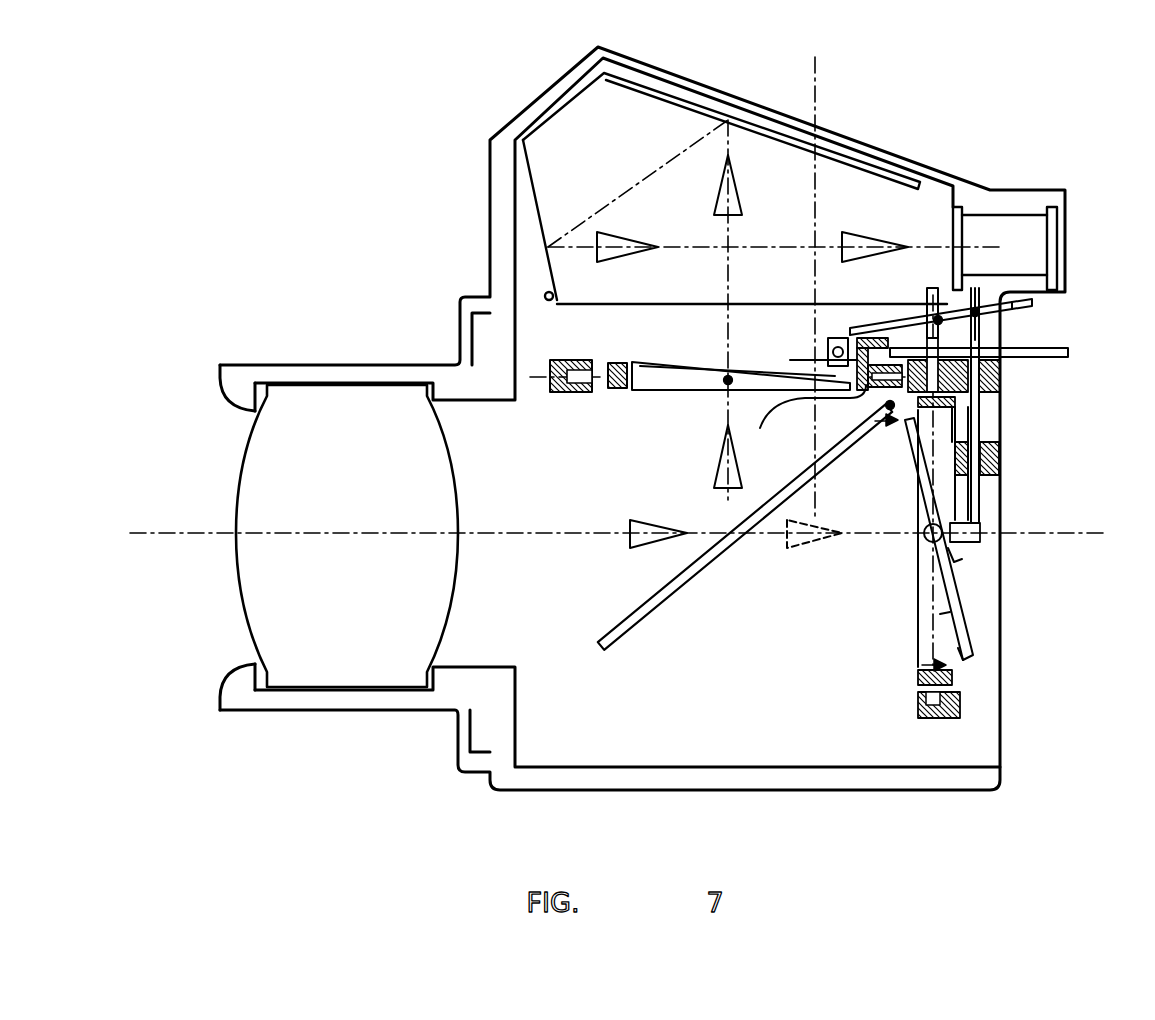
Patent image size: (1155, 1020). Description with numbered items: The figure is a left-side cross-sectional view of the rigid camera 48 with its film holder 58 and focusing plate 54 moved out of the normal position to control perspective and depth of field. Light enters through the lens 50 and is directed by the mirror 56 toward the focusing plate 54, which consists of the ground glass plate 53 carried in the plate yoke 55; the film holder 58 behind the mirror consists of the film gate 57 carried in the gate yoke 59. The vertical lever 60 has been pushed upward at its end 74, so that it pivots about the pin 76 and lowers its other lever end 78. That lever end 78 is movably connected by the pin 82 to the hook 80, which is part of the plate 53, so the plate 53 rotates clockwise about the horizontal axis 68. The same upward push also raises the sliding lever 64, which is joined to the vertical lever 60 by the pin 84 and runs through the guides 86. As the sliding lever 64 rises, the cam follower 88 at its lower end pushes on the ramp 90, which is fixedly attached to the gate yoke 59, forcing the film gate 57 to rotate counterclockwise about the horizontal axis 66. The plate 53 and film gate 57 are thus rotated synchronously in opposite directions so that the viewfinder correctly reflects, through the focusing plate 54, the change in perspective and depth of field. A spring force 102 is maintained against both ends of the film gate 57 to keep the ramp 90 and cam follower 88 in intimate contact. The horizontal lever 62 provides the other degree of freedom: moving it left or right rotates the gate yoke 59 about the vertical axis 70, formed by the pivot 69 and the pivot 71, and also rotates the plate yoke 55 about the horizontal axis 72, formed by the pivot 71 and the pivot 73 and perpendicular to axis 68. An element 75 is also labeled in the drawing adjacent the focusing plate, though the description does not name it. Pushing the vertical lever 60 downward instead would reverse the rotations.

The rigid camera 48 is at (395, 262).
The lens 50 is at (250, 583).
The ground glass plate 53 is at (690, 362).
The focusing plate 54 is at (655, 360).
The plate yoke 55 is at (768, 366).
The mirror 56 is at (690, 572).
The film gate 57 is at (968, 648).
The film holder 58 is at (907, 603).
The gate yoke 59 is at (944, 615).
The vertical lever 60 is at (1028, 302).
The horizontal lever 62 is at (1070, 353).
The sliding lever 64 is at (977, 495).
The horizontal axis 66 is at (922, 542).
The horizontal axis 68 is at (726, 386).
The pivot 69 is at (917, 698).
The vertical axis 70 is at (927, 455).
The pivot 71 is at (997, 362).
The horizontal axis 72 is at (624, 392).
The pivot 73 is at (598, 392).
The end 74 is at (1025, 313).
The screen frame 75 is at (795, 391).
The pin 76 is at (938, 316).
The lever end 78 is at (850, 340).
The hook 80 is at (826, 352).
The pin 82 is at (860, 338).
The pin 84 is at (977, 310).
The guides 86 is at (960, 440).
The cam follower 88 is at (967, 523).
The ramp 90 is at (962, 556).
The spring force 102 is at (870, 420).